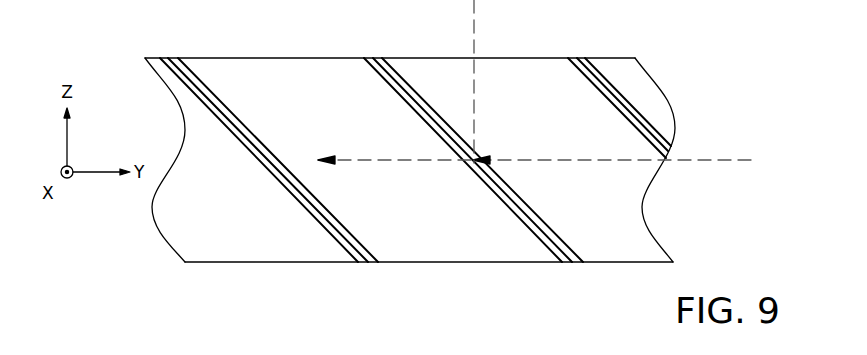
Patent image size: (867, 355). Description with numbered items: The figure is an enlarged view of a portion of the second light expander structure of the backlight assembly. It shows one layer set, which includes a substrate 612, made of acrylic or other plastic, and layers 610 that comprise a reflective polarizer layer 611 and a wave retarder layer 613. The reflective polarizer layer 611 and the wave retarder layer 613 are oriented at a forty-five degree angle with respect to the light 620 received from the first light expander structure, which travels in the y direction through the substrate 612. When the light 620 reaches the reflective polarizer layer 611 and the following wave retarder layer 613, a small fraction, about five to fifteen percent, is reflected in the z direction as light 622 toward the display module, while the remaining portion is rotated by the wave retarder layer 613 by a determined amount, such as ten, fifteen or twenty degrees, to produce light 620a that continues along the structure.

The layers 610 is at (379, 265).
The reflective polarizer layer 611 is at (380, 57).
The substrate 612 is at (433, 247).
The wave retarder layer 613 is at (367, 57).
The light 620 is at (688, 160).
The rotated light 620a is at (374, 160).
The reflected light 622 is at (476, 38).